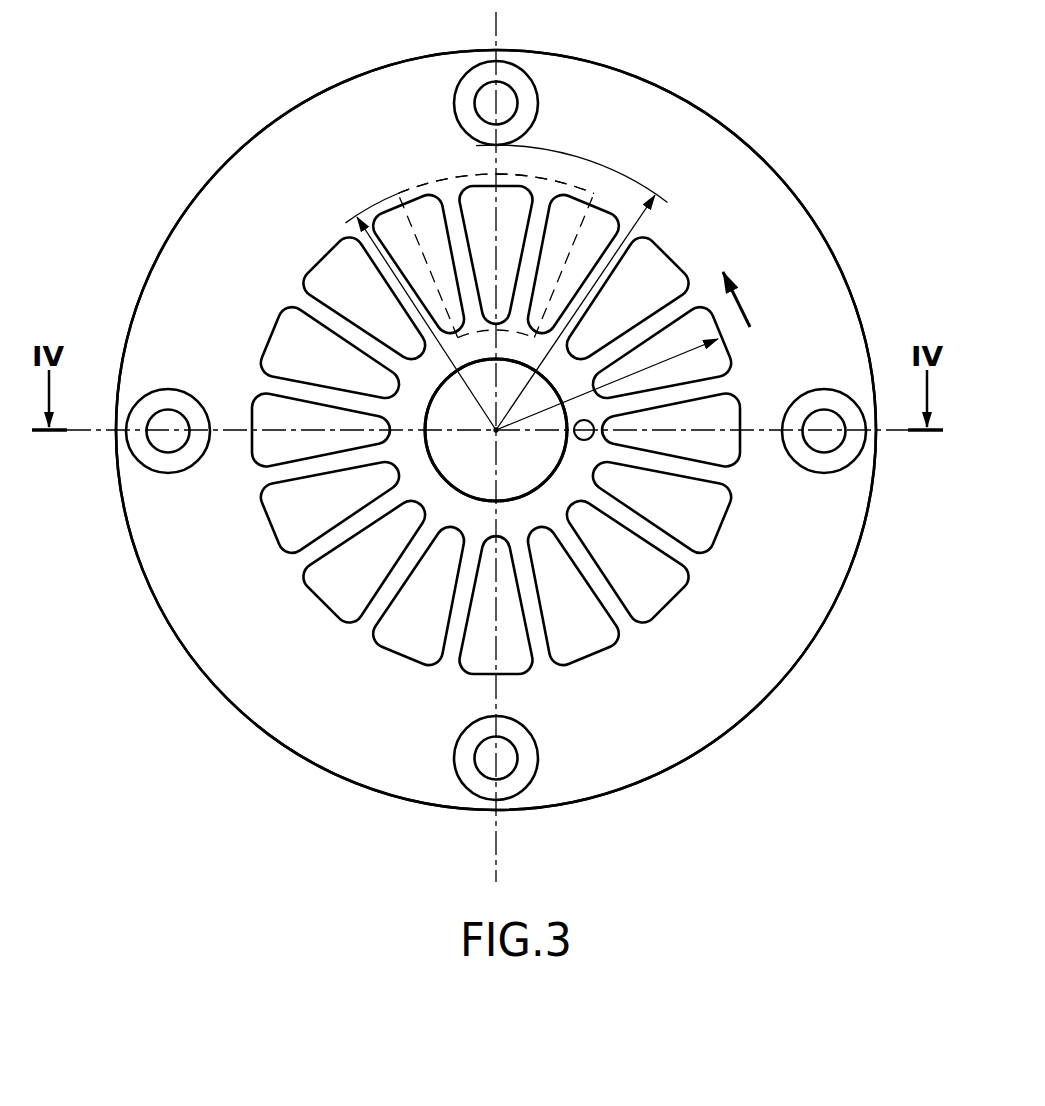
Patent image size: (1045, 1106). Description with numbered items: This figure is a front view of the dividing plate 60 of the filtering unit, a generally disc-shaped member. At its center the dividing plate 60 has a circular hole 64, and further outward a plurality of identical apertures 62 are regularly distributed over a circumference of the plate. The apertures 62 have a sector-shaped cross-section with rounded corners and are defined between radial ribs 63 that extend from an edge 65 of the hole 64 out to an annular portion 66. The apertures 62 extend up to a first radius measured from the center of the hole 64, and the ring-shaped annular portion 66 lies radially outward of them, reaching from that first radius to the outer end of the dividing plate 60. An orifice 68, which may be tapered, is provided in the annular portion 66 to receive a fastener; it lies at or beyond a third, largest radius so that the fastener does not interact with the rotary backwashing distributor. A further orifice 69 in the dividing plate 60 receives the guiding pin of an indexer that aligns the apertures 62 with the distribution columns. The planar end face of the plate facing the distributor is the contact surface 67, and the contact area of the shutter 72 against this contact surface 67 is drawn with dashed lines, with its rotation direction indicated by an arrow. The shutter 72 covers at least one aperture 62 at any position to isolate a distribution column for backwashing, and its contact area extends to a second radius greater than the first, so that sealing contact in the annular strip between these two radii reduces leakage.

The dividing plate 60 is at (795, 109).
The apertures 62 is at (397, 628).
The radial ribs 63 is at (609, 598).
The hole 64 is at (457, 467).
The edge 65 is at (519, 496).
The annular portion 66 is at (801, 246).
The contact surface 67 is at (424, 196).
The orifice 68 is at (539, 104).
The orifice 69 is at (584, 441).
The shutter 72 is at (467, 178).